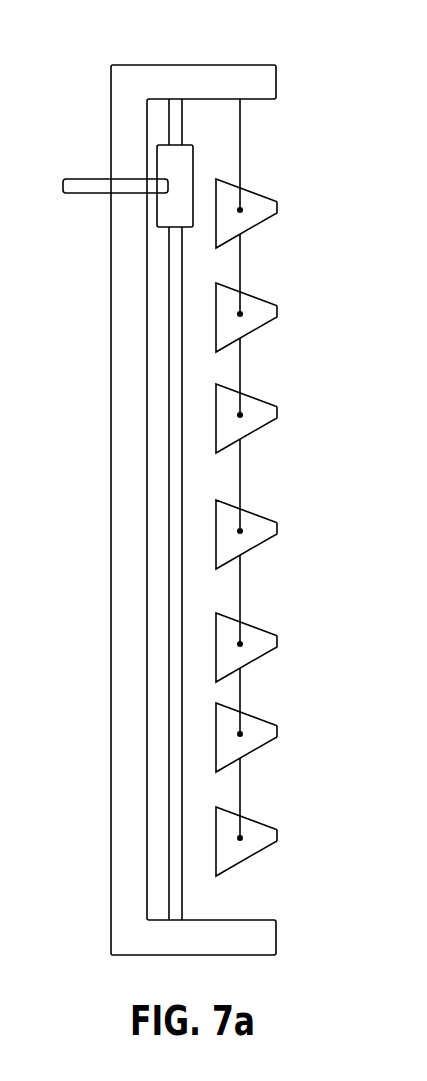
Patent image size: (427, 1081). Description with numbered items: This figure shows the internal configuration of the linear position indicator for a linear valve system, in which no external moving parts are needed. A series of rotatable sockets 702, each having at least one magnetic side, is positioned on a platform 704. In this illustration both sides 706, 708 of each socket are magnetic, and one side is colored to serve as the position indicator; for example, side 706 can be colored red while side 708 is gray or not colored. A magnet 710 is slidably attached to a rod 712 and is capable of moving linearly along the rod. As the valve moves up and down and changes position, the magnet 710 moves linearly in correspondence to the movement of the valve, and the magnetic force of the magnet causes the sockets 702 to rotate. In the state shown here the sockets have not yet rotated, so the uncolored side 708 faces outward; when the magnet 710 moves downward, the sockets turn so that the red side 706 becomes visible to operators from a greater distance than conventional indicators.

The rotatable sockets 702 is at (263, 213).
The platform 704 is at (222, 65).
The side 706 is at (265, 328).
The side 708 is at (250, 510).
The magnet 710 is at (167, 215).
The rod 712 is at (168, 409).